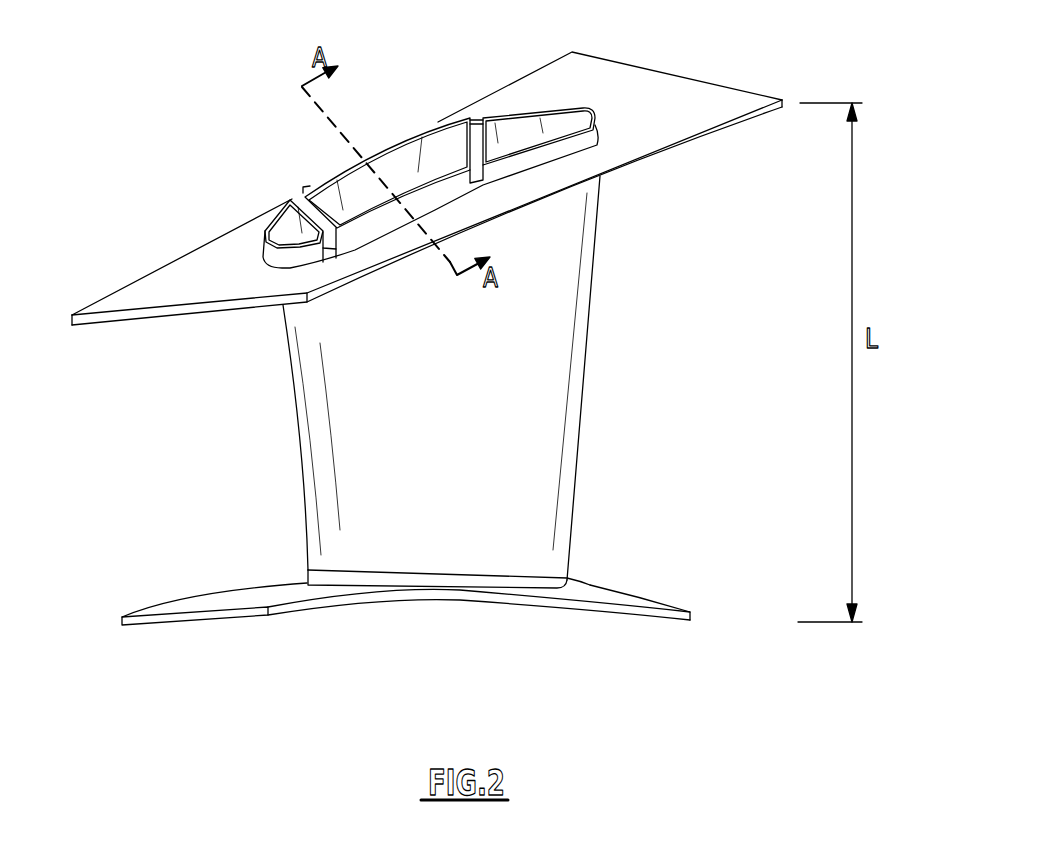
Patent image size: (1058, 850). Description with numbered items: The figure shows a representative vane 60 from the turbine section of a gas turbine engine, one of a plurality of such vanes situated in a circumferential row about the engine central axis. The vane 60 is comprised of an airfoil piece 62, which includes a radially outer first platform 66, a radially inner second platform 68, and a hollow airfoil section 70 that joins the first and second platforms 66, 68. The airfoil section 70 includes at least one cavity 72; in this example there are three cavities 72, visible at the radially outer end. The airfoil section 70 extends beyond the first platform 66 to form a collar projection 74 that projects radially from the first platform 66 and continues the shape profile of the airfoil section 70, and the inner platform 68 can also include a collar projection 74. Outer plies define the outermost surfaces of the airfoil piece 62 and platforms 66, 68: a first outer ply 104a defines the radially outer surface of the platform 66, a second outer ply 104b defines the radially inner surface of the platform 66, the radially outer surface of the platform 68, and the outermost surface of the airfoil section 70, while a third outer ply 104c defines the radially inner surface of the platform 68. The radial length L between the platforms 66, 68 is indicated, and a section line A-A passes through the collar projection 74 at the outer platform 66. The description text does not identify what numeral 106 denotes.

The vane 60 is at (208, 151).
The airfoil piece 62 is at (633, 223).
The first platform 66 is at (757, 90).
The second platform 68 is at (637, 597).
The airfoil section 70 is at (590, 338).
The cavity 72 is at (386, 140).
The collar projection 74 is at (413, 127).
The first outer ply 104a is at (549, 73).
The second outer ply 104b is at (580, 430).
The third outer ply 104c is at (318, 607).
The fillet region 106 is at (633, 188).